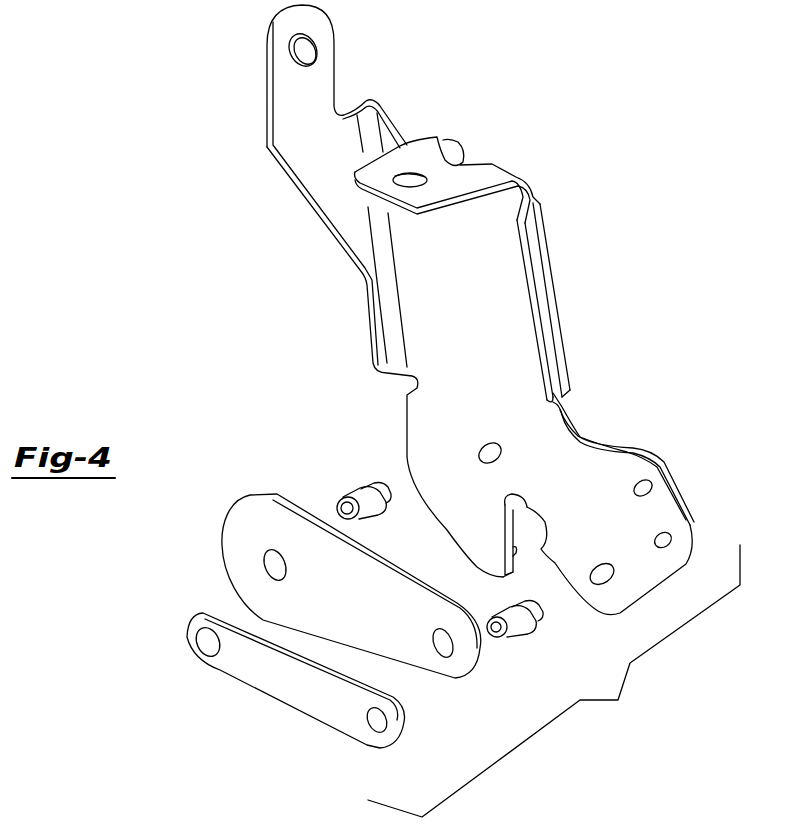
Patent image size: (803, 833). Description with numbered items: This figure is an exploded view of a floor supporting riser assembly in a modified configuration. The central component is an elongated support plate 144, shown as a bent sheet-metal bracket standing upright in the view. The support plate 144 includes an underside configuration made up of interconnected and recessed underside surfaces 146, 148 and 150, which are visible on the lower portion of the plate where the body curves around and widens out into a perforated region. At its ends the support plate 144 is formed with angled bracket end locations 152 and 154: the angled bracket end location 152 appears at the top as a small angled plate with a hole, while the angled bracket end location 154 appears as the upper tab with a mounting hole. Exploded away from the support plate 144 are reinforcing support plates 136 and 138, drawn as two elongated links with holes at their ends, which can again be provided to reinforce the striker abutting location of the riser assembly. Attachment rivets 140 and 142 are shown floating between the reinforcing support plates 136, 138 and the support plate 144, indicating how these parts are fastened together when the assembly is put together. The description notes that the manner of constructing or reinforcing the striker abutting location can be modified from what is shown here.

The reinforcing support plate 136 is at (240, 565).
The reinforcing support plate 138 is at (223, 670).
The attachment rivet 140 is at (363, 480).
The attachment rivet 142 is at (537, 617).
The elongated support plate 144 is at (433, 299).
The recessed underside surface 146 is at (513, 555).
The recessed underside surface 148 is at (507, 497).
The recessed underside surface 150 is at (541, 549).
The angled bracket end location 152 is at (425, 150).
The angled bracket end location 154 is at (313, 80).